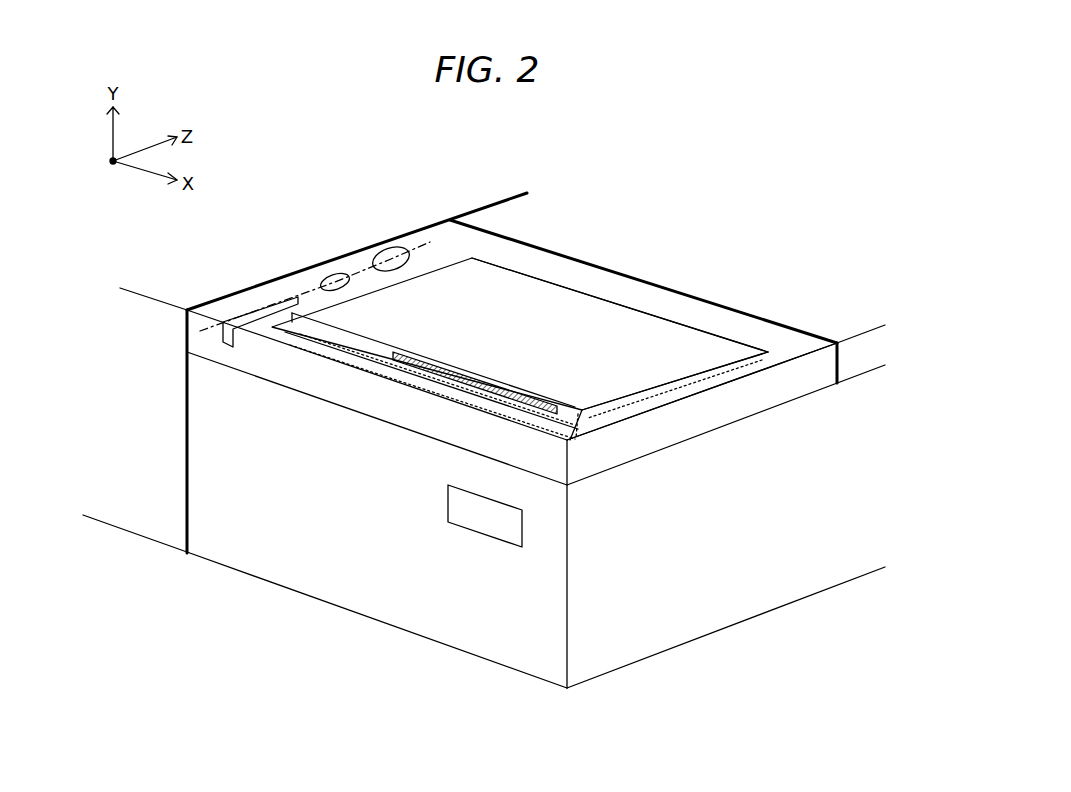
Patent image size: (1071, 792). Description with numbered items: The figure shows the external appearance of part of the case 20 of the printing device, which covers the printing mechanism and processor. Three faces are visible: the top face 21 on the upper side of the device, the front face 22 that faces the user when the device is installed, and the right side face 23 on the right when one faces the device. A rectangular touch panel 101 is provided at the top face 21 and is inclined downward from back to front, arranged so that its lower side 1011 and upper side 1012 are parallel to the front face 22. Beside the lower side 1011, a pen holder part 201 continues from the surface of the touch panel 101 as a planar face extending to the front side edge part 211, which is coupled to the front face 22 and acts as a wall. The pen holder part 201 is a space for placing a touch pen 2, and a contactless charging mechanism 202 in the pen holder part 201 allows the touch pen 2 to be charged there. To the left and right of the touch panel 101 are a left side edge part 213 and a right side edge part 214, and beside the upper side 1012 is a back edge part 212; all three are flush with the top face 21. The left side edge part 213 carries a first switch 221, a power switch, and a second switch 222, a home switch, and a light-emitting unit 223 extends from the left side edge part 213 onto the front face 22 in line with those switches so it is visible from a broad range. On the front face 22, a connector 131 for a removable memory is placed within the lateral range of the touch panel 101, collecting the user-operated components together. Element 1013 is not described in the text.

The touch pen 2 is at (420, 358).
The case 20 is at (805, 219).
The top face 21 is at (841, 333).
The front face 22 is at (230, 547).
The right side face 23 is at (663, 640).
The touch panel 101 is at (503, 280).
The connector 131 is at (490, 537).
The pen holder part 201 is at (323, 334).
The contactless charging mechanism 202 is at (367, 341).
The front side edge part 211 is at (400, 376).
The back edge part 212 is at (618, 297).
The left side edge part 213 is at (301, 282).
The right side edge part 214 is at (762, 366).
The first switch 221 is at (341, 277).
The second switch 222 is at (394, 250).
The light-emitting unit 223 is at (271, 300).
The lower side 1011 is at (584, 413).
The upper side 1012 is at (697, 327).
The front edge portion 1013 is at (651, 400).